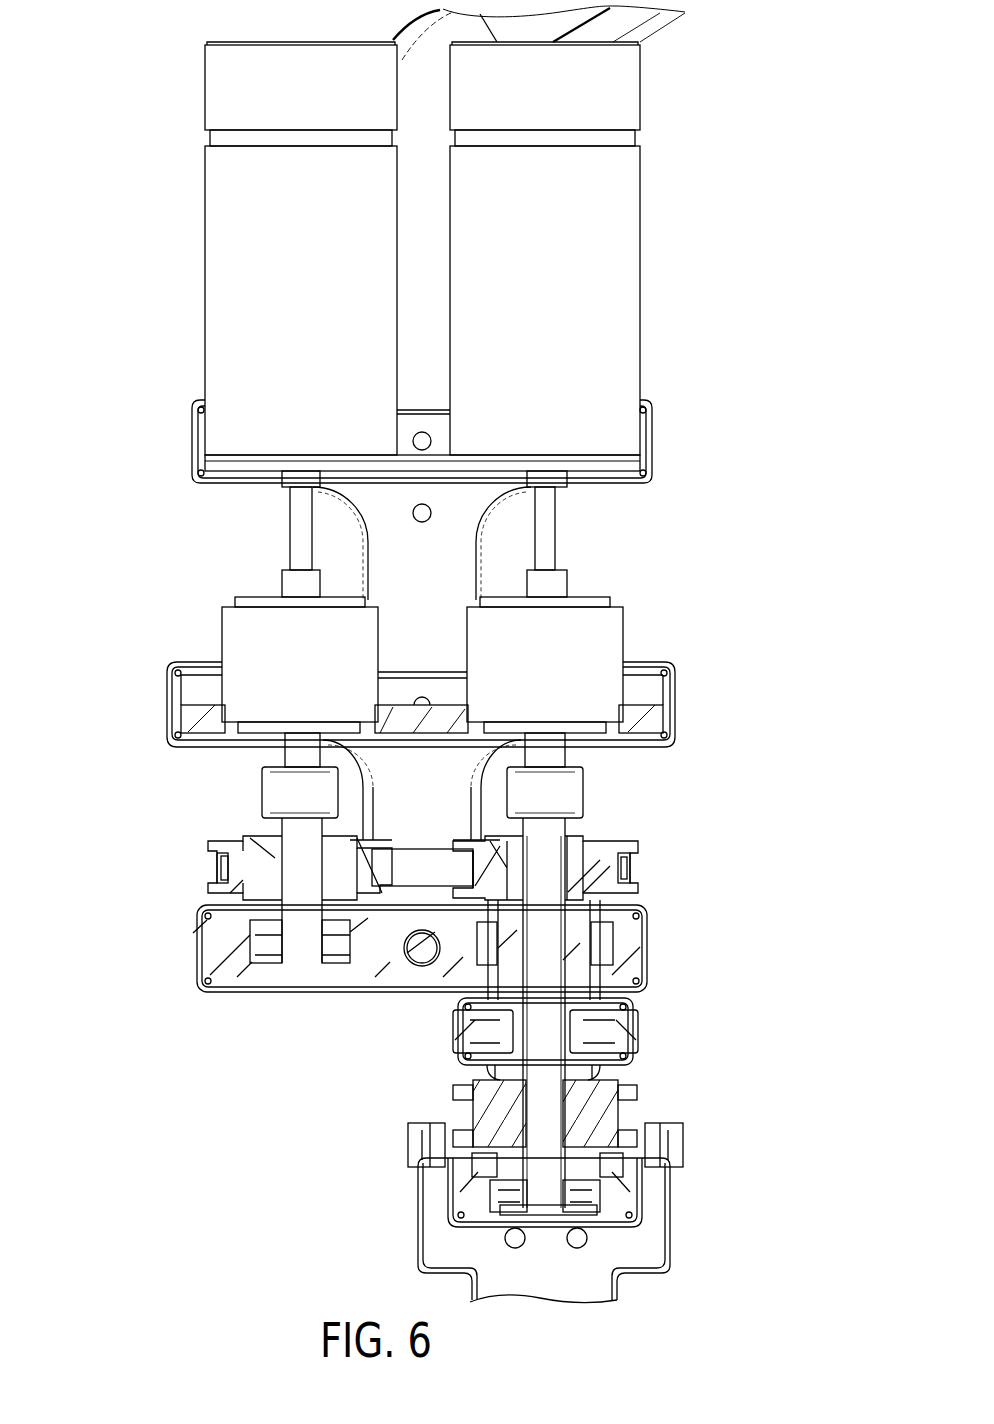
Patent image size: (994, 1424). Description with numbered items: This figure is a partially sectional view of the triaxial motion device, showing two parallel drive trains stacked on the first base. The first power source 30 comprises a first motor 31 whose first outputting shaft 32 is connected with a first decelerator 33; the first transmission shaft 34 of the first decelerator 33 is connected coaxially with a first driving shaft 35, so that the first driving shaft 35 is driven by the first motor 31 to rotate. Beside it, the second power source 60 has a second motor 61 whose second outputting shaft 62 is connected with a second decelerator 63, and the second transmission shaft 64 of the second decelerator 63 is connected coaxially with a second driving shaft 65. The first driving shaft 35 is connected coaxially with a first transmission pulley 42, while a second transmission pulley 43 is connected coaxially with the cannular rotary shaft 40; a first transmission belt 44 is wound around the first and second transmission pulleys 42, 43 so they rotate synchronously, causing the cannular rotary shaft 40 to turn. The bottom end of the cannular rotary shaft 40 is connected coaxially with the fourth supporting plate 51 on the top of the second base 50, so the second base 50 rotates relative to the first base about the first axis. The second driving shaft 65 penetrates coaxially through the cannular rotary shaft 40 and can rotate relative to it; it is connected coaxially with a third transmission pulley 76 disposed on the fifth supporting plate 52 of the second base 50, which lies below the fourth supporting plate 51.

The first power source 30 is at (188, 90).
The first motor 31 is at (237, 222).
The first outputting shaft 32 is at (297, 525).
The first decelerator 33 is at (237, 628).
The first transmission shaft 34 is at (297, 752).
The first driving shaft 35 is at (275, 797).
The cannular rotary shaft 40 is at (583, 940).
The first transmission pulley 42 is at (220, 845).
The second transmission pulley 43 is at (608, 846).
The first transmission belt 44 is at (403, 872).
The second base 50 is at (415, 1215).
The fourth supporting plate 51 is at (630, 1063).
The fifth supporting plate 52 is at (630, 1188).
The second power source 60 is at (655, 92).
The second motor 61 is at (598, 235).
The second outputting shaft 62 is at (550, 525).
The second decelerator 63 is at (608, 628).
The second transmission shaft 64 is at (555, 752).
The second driving shaft 65 is at (575, 795).
The third transmission pulley 76 is at (595, 1108).